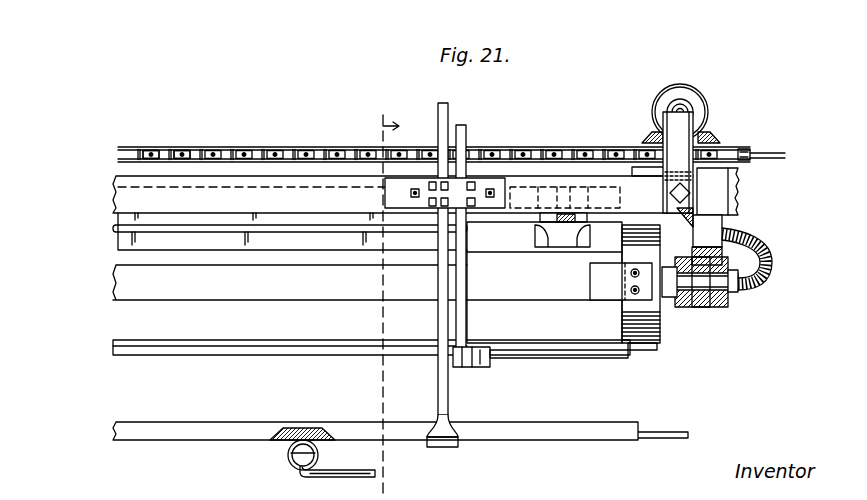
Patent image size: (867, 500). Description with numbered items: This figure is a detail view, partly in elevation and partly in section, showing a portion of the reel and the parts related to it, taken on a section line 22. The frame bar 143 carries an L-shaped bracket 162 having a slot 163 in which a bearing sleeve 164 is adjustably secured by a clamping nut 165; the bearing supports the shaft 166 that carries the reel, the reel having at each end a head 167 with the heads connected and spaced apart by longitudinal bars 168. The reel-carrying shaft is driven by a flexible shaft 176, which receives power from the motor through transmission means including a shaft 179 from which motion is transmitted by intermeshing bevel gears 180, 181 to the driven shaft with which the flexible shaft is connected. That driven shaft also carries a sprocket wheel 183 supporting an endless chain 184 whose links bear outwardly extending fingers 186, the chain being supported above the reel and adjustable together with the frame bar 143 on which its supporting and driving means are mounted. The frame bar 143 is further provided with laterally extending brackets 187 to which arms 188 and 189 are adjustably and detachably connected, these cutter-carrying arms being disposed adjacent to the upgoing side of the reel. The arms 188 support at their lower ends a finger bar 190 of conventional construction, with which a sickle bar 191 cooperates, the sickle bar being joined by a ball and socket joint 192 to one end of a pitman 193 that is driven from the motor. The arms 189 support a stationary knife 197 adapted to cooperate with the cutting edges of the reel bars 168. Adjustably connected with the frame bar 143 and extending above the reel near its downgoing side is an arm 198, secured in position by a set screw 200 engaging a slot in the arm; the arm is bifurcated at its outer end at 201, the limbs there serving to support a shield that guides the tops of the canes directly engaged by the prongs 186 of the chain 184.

The section line 22 is at (382, 294).
The frame bar 143 is at (202, 198).
The L-shaped bracket 162 is at (708, 238).
The slot 163 is at (722, 258).
The bearing sleeve 164 is at (718, 307).
The clamping nut 165 is at (684, 310).
The shaft 166 is at (698, 307).
The head 167 is at (630, 316).
The longitudinal bars 168 is at (280, 338).
The flexible shaft 176 is at (767, 266).
The shaft 179 is at (693, 112).
The bevel gear 180 is at (694, 95).
The bevel gear 181 is at (708, 135).
The sprocket wheel 183 is at (742, 147).
The endless chain 184 is at (322, 135).
The fingers 186 is at (200, 153).
The laterally extending brackets 187 is at (452, 187).
The arms 188 is at (438, 380).
The arms 189 is at (468, 317).
The finger bar 190 is at (492, 437).
The sickle bar 191 is at (280, 442).
The ball and socket joint 192 is at (318, 453).
The pitman 193 is at (348, 478).
The stationary knife 197 is at (511, 360).
The arm 198 is at (568, 222).
The set screw 200 is at (560, 228).
The bifurcated end 201 is at (562, 226).